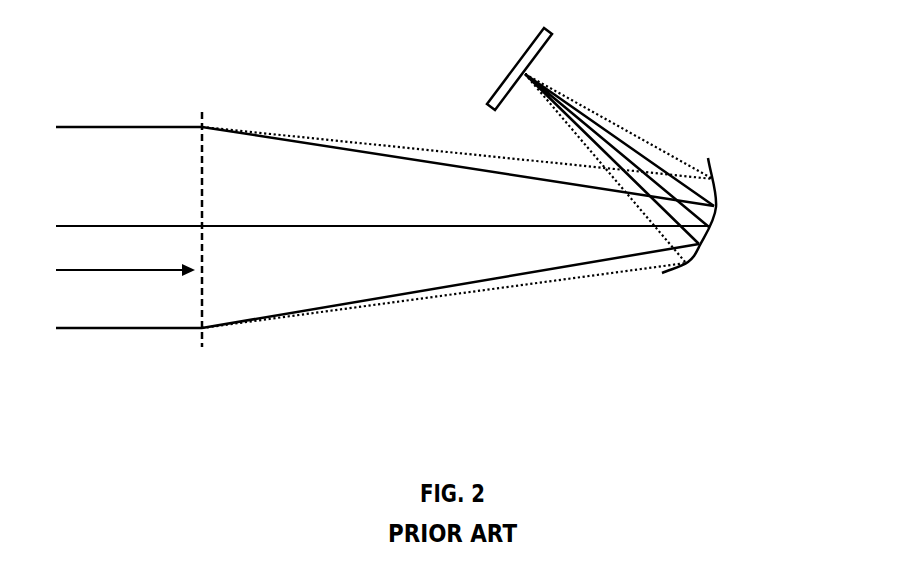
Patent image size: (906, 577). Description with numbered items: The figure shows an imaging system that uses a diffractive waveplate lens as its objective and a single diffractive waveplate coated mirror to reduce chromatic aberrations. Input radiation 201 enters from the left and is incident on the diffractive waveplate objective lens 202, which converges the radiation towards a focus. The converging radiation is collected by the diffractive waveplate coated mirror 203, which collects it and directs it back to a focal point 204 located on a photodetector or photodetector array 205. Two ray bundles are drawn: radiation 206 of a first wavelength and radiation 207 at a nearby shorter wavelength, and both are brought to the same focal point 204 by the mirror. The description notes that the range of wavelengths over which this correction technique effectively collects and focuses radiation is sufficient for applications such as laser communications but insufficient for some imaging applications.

The input radiation 201 is at (149, 315).
The diffractive waveplate objective lens 202 is at (202, 113).
The diffractive waveplate coated mirror 203 is at (675, 268).
The focal point 204 is at (525, 76).
The photodetector or photodetector array 205 is at (497, 98).
The radiation of a first wavelength 206 is at (518, 275).
The radiation at a nearby shorter wavelength 207 is at (587, 275).